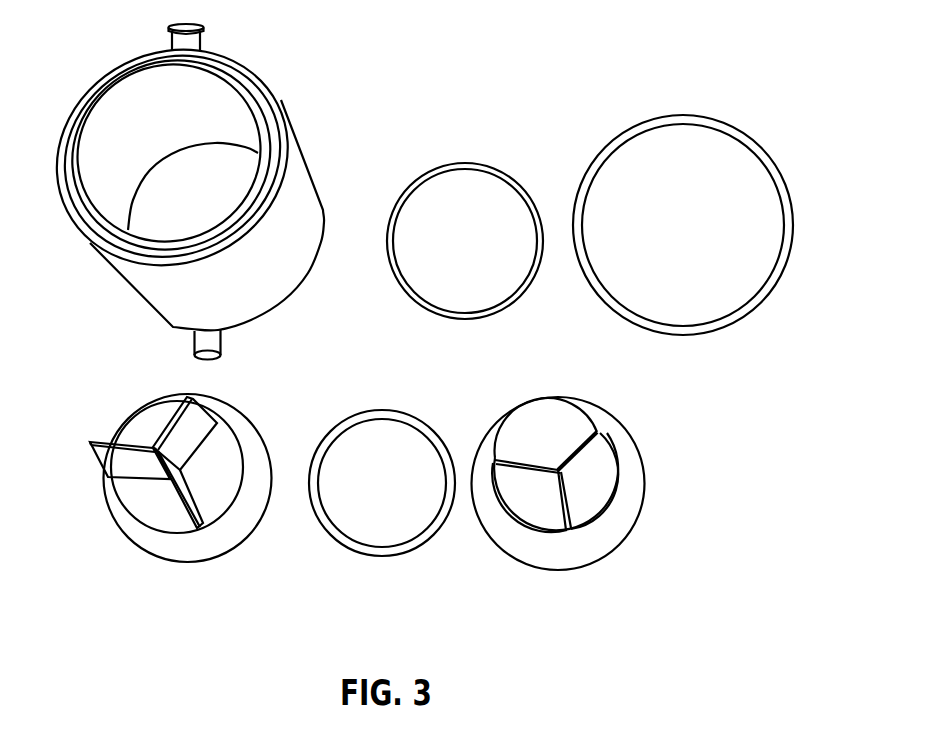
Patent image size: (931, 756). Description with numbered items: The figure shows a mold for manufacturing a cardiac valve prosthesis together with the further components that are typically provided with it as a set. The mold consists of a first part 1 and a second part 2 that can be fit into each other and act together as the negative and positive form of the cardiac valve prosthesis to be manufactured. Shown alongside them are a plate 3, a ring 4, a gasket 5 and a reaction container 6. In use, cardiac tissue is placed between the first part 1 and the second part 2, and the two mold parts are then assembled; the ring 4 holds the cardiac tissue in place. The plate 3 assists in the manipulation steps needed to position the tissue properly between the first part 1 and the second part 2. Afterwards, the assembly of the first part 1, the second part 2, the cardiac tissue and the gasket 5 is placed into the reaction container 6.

The first part 1 is at (607, 508).
The second part 2 is at (162, 510).
The plate 3 is at (693, 117).
The ring 4 is at (388, 550).
The gasket 5 is at (470, 163).
The reaction container 6 is at (257, 88).